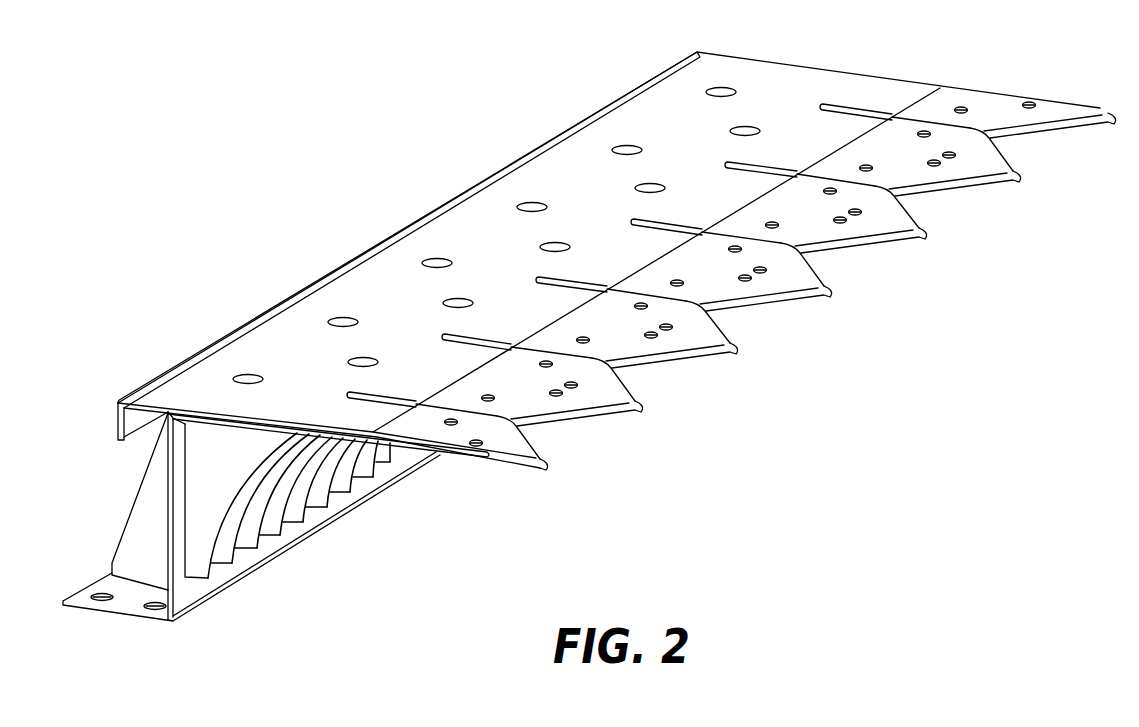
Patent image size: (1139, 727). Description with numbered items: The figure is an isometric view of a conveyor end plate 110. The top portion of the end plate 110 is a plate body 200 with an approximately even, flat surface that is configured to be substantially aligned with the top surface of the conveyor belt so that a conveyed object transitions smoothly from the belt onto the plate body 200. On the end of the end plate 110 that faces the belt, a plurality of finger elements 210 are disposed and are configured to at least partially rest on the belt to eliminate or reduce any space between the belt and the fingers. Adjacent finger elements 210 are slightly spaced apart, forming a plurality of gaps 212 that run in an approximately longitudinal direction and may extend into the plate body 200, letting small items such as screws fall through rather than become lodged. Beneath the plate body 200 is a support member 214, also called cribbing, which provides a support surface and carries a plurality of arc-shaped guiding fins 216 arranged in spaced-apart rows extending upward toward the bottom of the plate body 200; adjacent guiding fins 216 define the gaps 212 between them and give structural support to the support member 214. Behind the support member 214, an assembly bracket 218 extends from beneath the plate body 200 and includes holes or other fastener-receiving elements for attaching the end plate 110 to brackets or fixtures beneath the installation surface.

The conveyor end plate 110 is at (242, 92).
The plate body 200 is at (563, 163).
The plurality of finger elements 210 is at (927, 297).
The plurality of gaps 212 is at (767, 163).
The support member 214 is at (233, 580).
The plurality of guiding fins 216 is at (305, 512).
The assembly bracket 218 is at (140, 555).